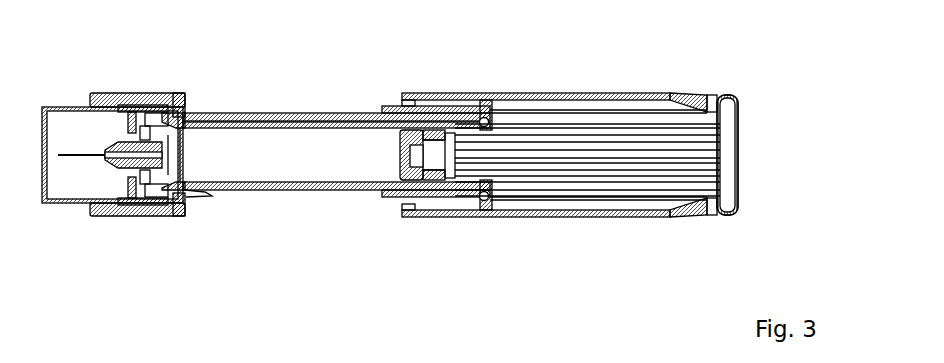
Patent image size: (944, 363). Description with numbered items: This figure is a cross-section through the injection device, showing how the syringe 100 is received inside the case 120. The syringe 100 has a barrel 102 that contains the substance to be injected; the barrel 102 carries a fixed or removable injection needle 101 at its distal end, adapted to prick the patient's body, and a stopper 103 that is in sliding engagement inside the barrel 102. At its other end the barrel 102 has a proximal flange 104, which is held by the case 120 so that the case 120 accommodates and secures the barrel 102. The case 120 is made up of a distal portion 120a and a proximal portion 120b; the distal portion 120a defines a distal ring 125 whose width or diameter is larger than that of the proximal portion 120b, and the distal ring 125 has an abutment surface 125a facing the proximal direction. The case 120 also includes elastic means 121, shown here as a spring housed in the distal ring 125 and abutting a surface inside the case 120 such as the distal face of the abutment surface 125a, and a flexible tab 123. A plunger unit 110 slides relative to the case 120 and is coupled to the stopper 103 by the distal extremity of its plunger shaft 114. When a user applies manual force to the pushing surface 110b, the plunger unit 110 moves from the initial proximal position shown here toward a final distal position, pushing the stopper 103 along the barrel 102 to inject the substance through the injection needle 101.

The syringe 100 is at (353, 185).
The injection needle 101 is at (58, 155).
The barrel 102 is at (308, 123).
The stopper 103 is at (413, 177).
The proximal flange 104 is at (490, 127).
The plunger unit 110 is at (720, 95).
The pushing surface 110b is at (733, 168).
The plunger shaft 114 is at (588, 163).
The case 120 is at (270, 115).
The distal portion 120a is at (147, 93).
The proximal portion 120b is at (430, 117).
The elastic means 121 is at (117, 107).
The flexible tab 123 is at (197, 193).
The distal ring 125 is at (157, 97).
The abutment surface 125a is at (186, 198).